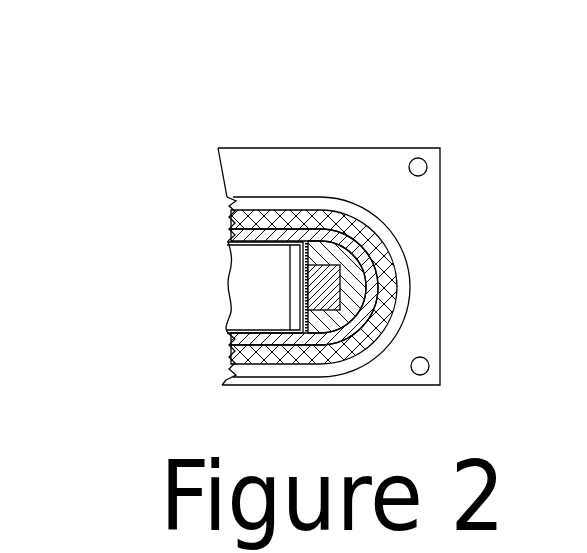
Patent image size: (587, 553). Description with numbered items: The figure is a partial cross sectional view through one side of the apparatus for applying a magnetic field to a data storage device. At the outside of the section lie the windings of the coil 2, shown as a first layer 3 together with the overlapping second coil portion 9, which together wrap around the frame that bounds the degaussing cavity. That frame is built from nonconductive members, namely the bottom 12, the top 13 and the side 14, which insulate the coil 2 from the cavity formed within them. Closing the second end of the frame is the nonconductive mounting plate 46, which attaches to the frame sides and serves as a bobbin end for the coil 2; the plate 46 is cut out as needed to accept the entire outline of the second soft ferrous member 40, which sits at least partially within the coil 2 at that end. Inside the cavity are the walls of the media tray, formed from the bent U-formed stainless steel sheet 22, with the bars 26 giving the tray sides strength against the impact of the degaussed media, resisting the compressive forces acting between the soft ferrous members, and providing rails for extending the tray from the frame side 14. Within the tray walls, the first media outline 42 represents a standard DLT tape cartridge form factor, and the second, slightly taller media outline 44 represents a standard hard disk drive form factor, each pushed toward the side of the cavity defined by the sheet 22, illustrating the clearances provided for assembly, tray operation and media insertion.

The coil 2 is at (257, 132).
The first layer 3 is at (243, 223).
The second coil portion 9 is at (248, 205).
The bottom 12 is at (233, 348).
The top 13 is at (327, 238).
The side 14 is at (377, 300).
The U-formed stainless steel sheet 22 is at (247, 331).
The bars 26 is at (335, 279).
The second soft ferrous member 40 is at (300, 240).
The first media outline 42 is at (300, 262).
The second media outline 44 is at (300, 280).
The nonconductive mounting plate 46 is at (418, 203).